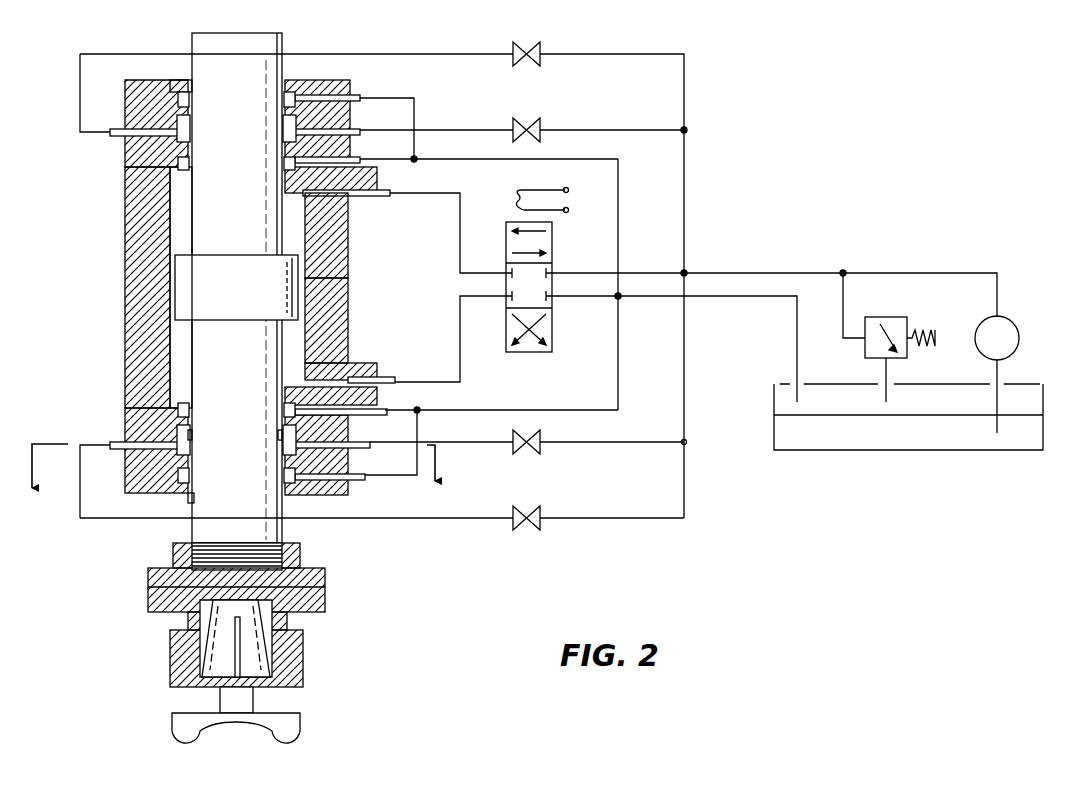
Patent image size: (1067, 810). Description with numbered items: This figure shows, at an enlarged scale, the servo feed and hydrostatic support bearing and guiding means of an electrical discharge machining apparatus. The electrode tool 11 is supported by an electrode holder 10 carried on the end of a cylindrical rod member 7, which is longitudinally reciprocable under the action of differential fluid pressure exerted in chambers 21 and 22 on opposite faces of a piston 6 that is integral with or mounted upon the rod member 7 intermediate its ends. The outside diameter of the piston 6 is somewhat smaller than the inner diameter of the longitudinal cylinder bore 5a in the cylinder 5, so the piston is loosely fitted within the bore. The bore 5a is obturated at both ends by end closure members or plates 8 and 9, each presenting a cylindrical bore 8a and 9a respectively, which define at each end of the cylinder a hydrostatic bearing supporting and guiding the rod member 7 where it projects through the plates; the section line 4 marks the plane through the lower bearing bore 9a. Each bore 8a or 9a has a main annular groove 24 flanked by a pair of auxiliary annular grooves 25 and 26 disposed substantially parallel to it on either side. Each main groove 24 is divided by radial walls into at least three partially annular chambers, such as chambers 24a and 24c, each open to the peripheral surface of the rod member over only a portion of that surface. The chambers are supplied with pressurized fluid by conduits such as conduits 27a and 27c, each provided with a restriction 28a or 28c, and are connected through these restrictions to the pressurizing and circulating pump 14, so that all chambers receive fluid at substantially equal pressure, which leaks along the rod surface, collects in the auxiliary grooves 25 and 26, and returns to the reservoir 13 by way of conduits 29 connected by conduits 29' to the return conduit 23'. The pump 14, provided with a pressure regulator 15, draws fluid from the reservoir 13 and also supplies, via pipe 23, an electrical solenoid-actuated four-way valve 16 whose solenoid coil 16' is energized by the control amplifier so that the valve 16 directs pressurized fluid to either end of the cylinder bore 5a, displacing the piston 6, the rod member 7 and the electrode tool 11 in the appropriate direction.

The section line 4 is at (229, 466).
The cylinder 5 is at (125, 232).
The cylinder bore 5a is at (176, 238).
The piston 6 is at (192, 290).
The cylindrical rod member 7 is at (205, 352).
The end closure member 8 is at (130, 96).
The cylindrical bore 8a is at (196, 80).
The end closure member 9 is at (128, 428).
The cylindrical bore 9a is at (196, 500).
The electrode holder 10 is at (323, 612).
The electrode tool 11 is at (292, 712).
The reservoir 13 is at (934, 450).
The pressurizing and circulating pump 14 is at (1019, 338).
The pressure regulator 15 is at (893, 320).
The four-way valve 16 is at (550, 287).
The solenoid coil 16' is at (543, 187).
The chamber 21 is at (308, 336).
The chamber 22 is at (308, 238).
The pipe 23 is at (774, 290).
The return conduit 23' is at (674, 347).
The main annular groove 24 is at (283, 128).
The partially annular chamber 24a is at (204, 430).
The partially annular chamber 24c is at (283, 432).
The auxiliary annular groove 25 is at (284, 99).
The auxiliary annular groove 26 is at (284, 158).
The conduit 27a is at (440, 130).
The conduit 27c is at (444, 54).
The restriction 28a is at (540, 120).
The restriction 28c is at (542, 60).
The conduit 29 is at (489, 272).
The conduit 29' is at (642, 284).